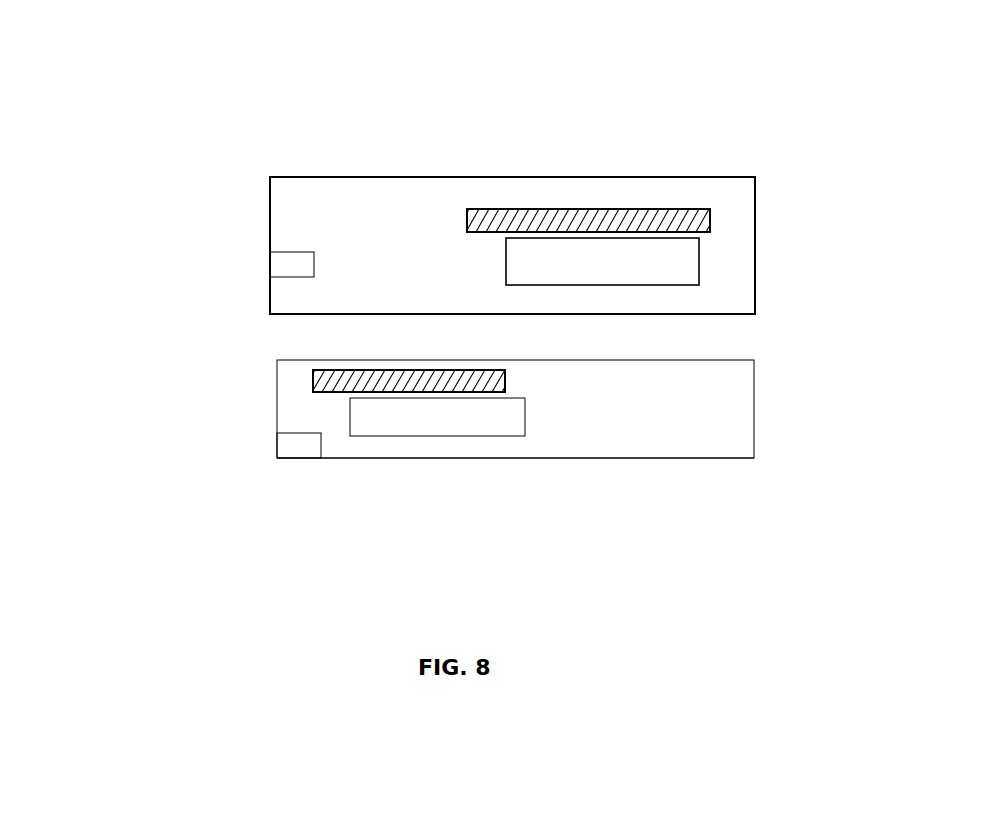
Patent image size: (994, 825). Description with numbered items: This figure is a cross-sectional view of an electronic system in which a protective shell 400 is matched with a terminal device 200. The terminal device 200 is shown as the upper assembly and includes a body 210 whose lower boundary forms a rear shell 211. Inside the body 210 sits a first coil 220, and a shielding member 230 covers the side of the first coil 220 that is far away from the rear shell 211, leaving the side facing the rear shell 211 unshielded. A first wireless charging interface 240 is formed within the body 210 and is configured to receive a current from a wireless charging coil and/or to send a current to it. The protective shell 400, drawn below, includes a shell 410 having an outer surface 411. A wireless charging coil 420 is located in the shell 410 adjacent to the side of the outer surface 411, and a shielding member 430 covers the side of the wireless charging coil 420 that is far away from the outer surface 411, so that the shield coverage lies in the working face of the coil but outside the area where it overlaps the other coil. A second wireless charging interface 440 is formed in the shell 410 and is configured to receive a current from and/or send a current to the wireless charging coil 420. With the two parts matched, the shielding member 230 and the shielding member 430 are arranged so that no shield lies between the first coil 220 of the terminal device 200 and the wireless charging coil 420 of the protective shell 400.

The terminal device 200 is at (267, 158).
The body 210 is at (732, 268).
The rear shell 211 is at (292, 315).
The first coil 220 is at (682, 255).
The shielding member 230 is at (565, 223).
The first wireless charging interface 240 is at (280, 252).
The protective shell 400 is at (766, 395).
The shell 410 is at (735, 445).
The outer surface 411 is at (660, 458).
The wireless charging coil 420 is at (372, 422).
The shielding member 430 is at (313, 384).
The second wireless charging interface 440 is at (283, 443).